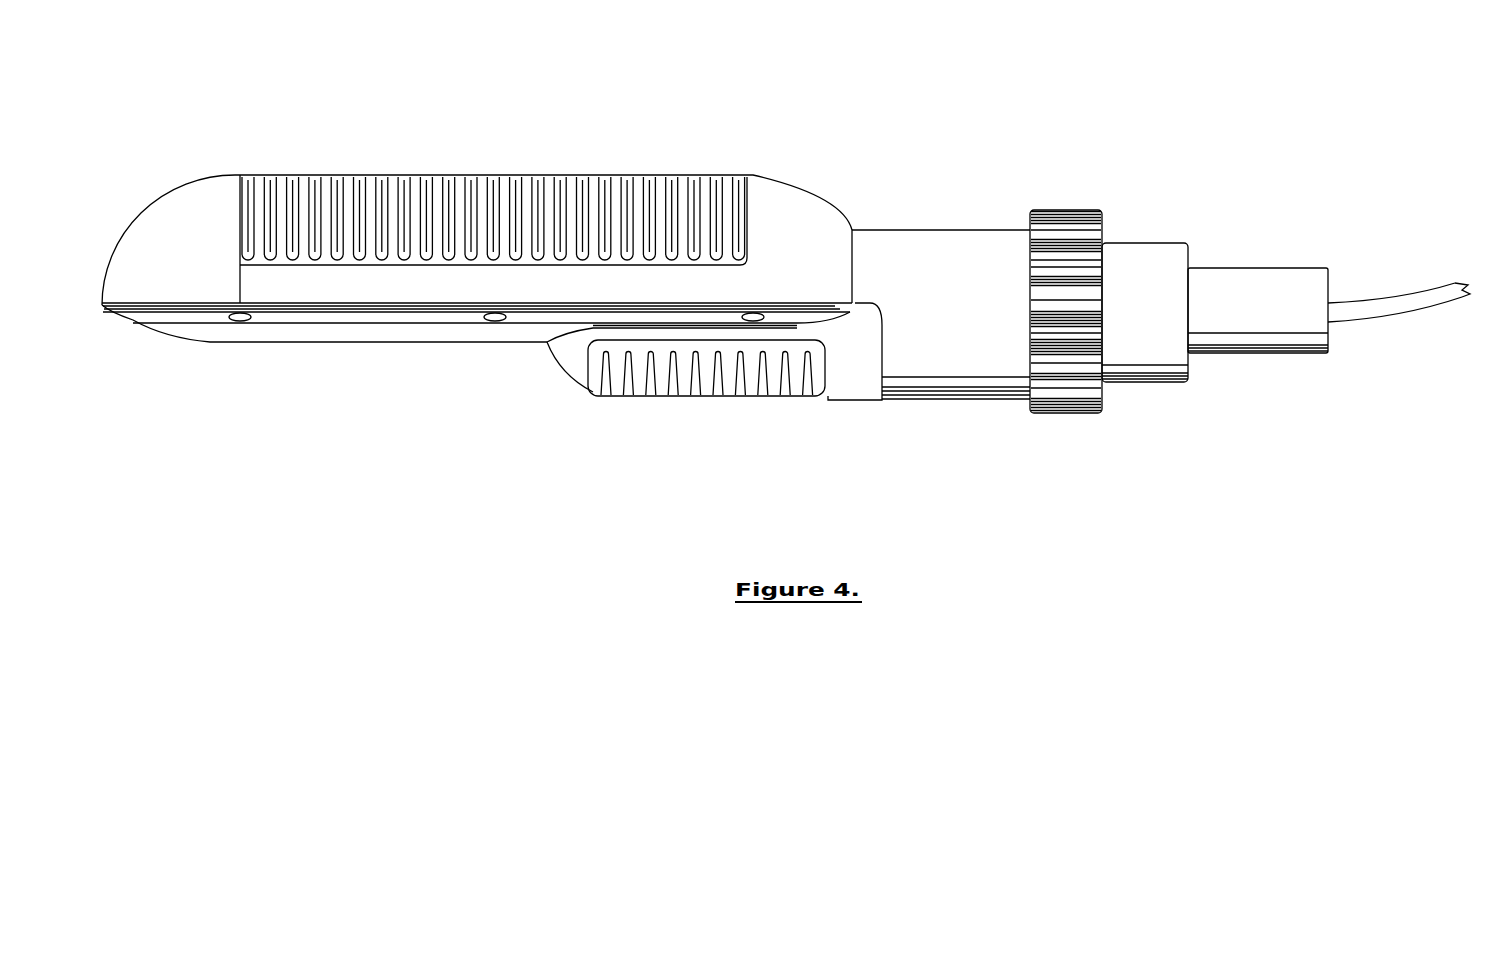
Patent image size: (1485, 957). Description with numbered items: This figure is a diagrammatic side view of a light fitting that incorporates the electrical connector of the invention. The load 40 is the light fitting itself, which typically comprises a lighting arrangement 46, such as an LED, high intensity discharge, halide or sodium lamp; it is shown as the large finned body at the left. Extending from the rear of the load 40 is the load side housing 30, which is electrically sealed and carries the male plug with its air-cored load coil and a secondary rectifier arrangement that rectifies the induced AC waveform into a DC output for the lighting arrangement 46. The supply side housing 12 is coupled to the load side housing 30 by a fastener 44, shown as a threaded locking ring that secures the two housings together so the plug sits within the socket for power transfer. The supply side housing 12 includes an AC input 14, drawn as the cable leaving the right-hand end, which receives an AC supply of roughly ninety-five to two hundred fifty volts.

The load 40 is at (880, 179).
The lighting arrangement 46 is at (383, 423).
The load side housing 30 is at (918, 328).
The fastener 44 is at (1052, 378).
The supply side housing 12 is at (1150, 268).
The AC input 14 is at (1396, 311).